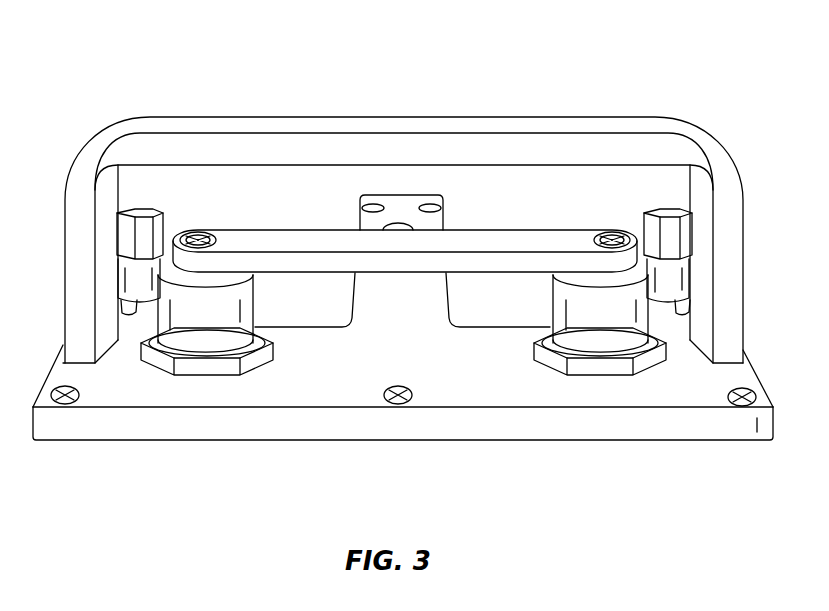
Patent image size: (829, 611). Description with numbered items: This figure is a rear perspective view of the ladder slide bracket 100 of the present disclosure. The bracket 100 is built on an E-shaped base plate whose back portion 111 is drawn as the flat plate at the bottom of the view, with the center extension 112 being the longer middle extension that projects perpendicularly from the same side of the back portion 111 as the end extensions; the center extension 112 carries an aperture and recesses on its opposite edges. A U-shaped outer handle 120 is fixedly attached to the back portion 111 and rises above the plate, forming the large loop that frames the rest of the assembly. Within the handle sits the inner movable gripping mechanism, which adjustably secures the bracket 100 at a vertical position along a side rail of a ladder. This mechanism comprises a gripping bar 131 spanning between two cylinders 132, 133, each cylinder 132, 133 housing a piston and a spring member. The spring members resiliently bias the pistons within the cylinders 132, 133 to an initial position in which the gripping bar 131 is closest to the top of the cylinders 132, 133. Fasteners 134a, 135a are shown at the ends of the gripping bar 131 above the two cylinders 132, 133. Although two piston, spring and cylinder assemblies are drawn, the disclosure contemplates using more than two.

The bracket 100 is at (403, 301).
The back portion 111 is at (416, 371).
The center extension 112 is at (417, 298).
The outer handle 120 is at (549, 110).
The gripping bar 131 is at (398, 245).
The cylinder 132 is at (542, 300).
The cylinder 133 is at (268, 298).
The right fastener screw 134a is at (608, 236).
The left fastener screw 135a is at (212, 237).